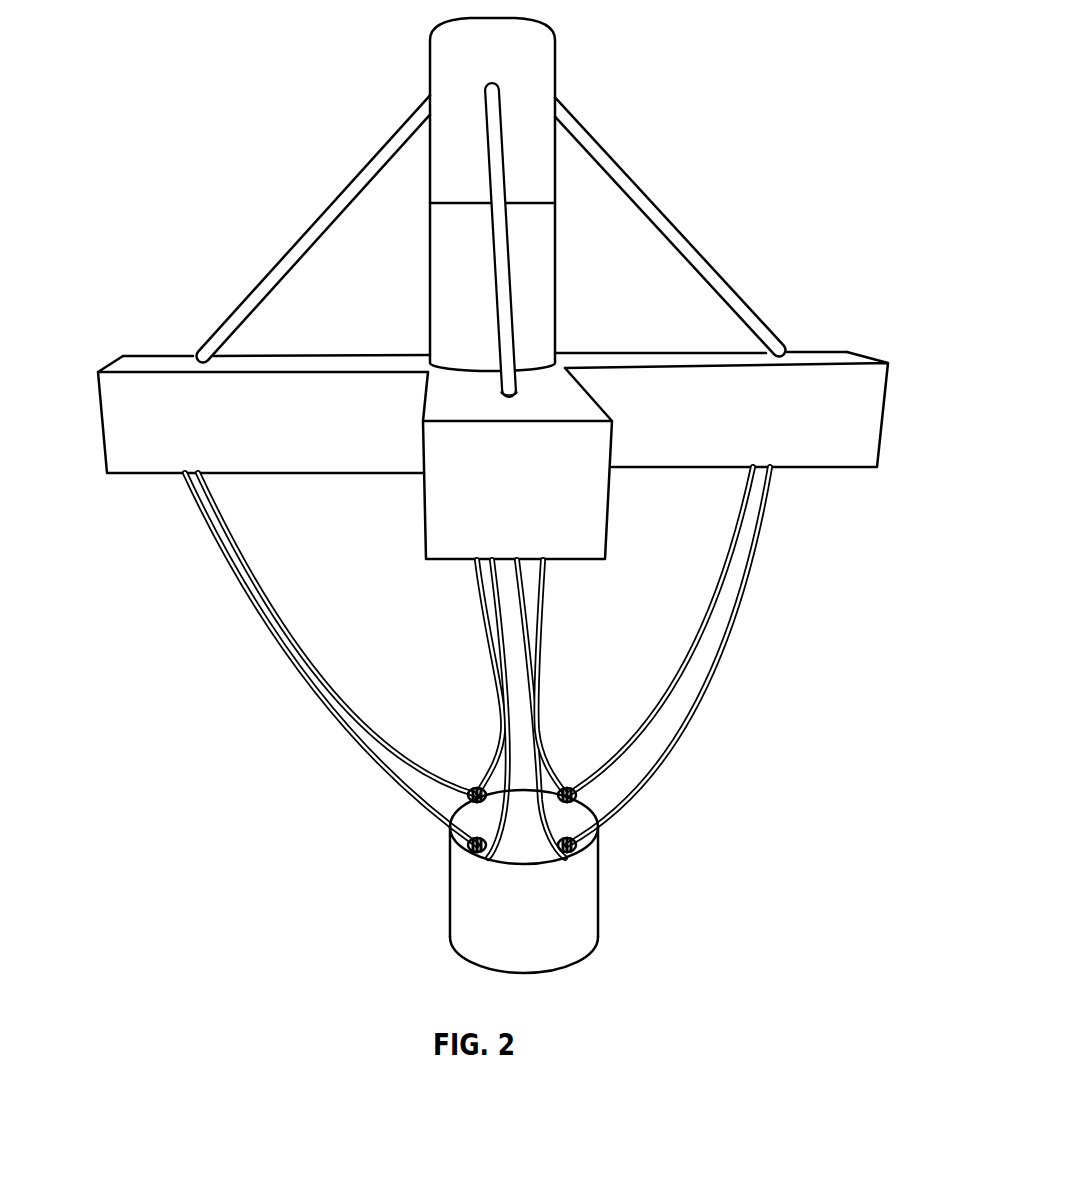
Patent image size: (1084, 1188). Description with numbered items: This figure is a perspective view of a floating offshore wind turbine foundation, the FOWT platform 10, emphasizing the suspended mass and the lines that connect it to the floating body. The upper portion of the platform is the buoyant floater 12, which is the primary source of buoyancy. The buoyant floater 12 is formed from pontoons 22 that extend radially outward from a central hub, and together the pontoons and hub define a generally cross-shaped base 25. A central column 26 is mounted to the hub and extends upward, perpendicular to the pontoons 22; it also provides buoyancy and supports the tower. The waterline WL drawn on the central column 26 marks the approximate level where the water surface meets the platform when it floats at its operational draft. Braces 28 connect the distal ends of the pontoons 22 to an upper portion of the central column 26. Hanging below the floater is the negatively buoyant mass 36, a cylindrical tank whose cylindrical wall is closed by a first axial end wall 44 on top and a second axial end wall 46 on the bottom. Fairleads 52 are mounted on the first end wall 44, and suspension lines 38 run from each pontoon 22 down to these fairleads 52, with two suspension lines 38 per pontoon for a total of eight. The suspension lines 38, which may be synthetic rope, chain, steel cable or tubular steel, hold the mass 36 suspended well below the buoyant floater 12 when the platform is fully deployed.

The FOWT platform 10 is at (246, 56).
The buoyant floater 12 is at (110, 490).
The pontoons 22 is at (870, 388).
The cross-shaped base 25 is at (884, 436).
The central column 26 is at (540, 72).
The braces 28 is at (312, 225).
The negatively buoyant mass 36 is at (572, 898).
The suspension lines 38 is at (753, 500).
The first axial end wall 44 is at (510, 855).
The second axial end wall 46 is at (523, 973).
The fairleads 52 is at (477, 790).
The waterline WL is at (478, 202).